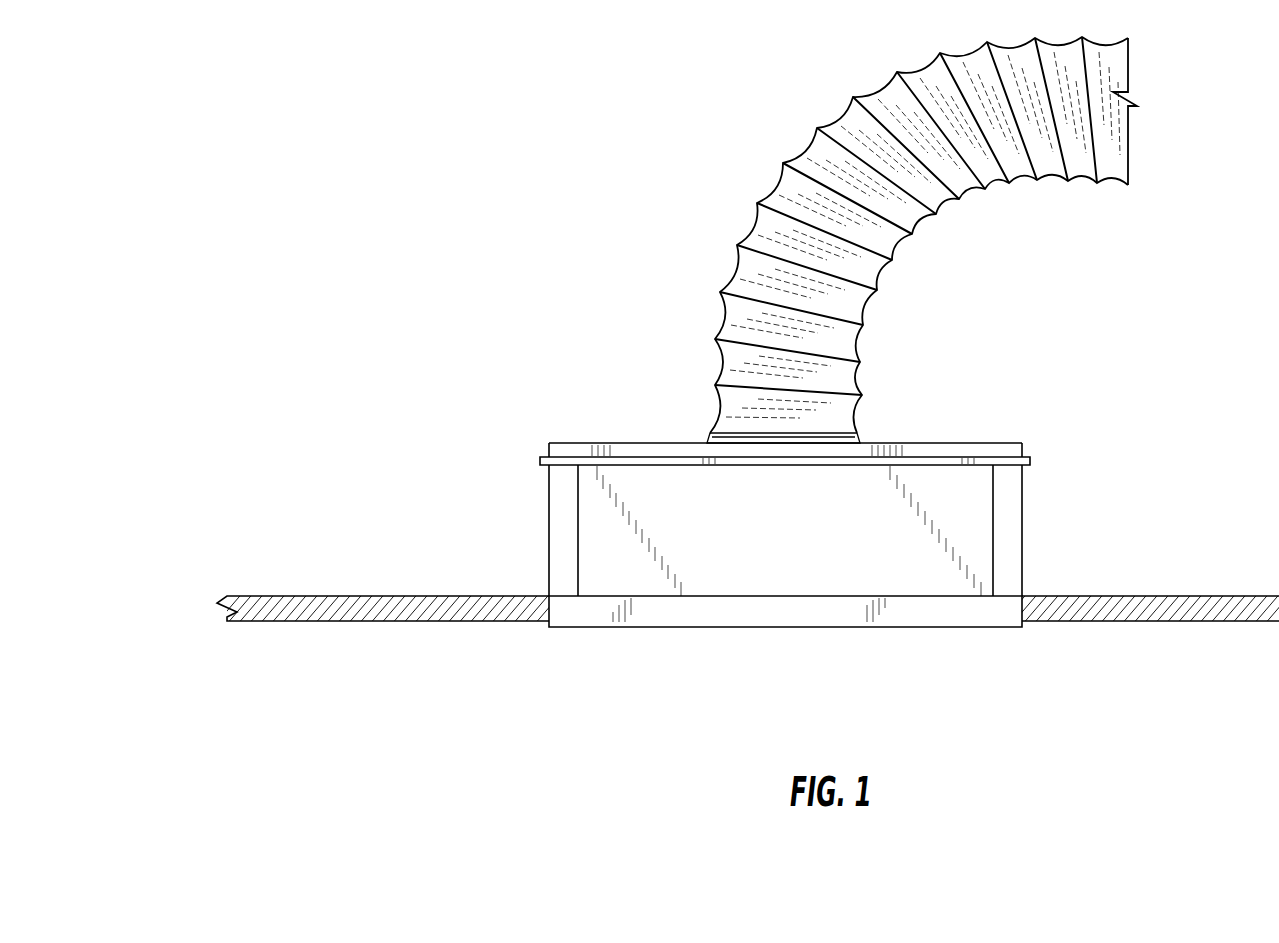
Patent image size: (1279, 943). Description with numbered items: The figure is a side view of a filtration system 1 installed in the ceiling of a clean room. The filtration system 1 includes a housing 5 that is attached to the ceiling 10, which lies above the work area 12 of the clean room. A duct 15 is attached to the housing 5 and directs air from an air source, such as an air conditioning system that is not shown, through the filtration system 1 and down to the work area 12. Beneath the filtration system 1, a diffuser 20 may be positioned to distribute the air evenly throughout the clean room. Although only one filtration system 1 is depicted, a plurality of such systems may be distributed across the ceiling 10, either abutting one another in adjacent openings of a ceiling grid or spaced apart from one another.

The filtration system 1 is at (596, 392).
The housing 5 is at (548, 528).
The ceiling 10 is at (347, 584).
The work area 12 is at (451, 673).
The duct 15 is at (753, 223).
The diffuser 20 is at (780, 627).